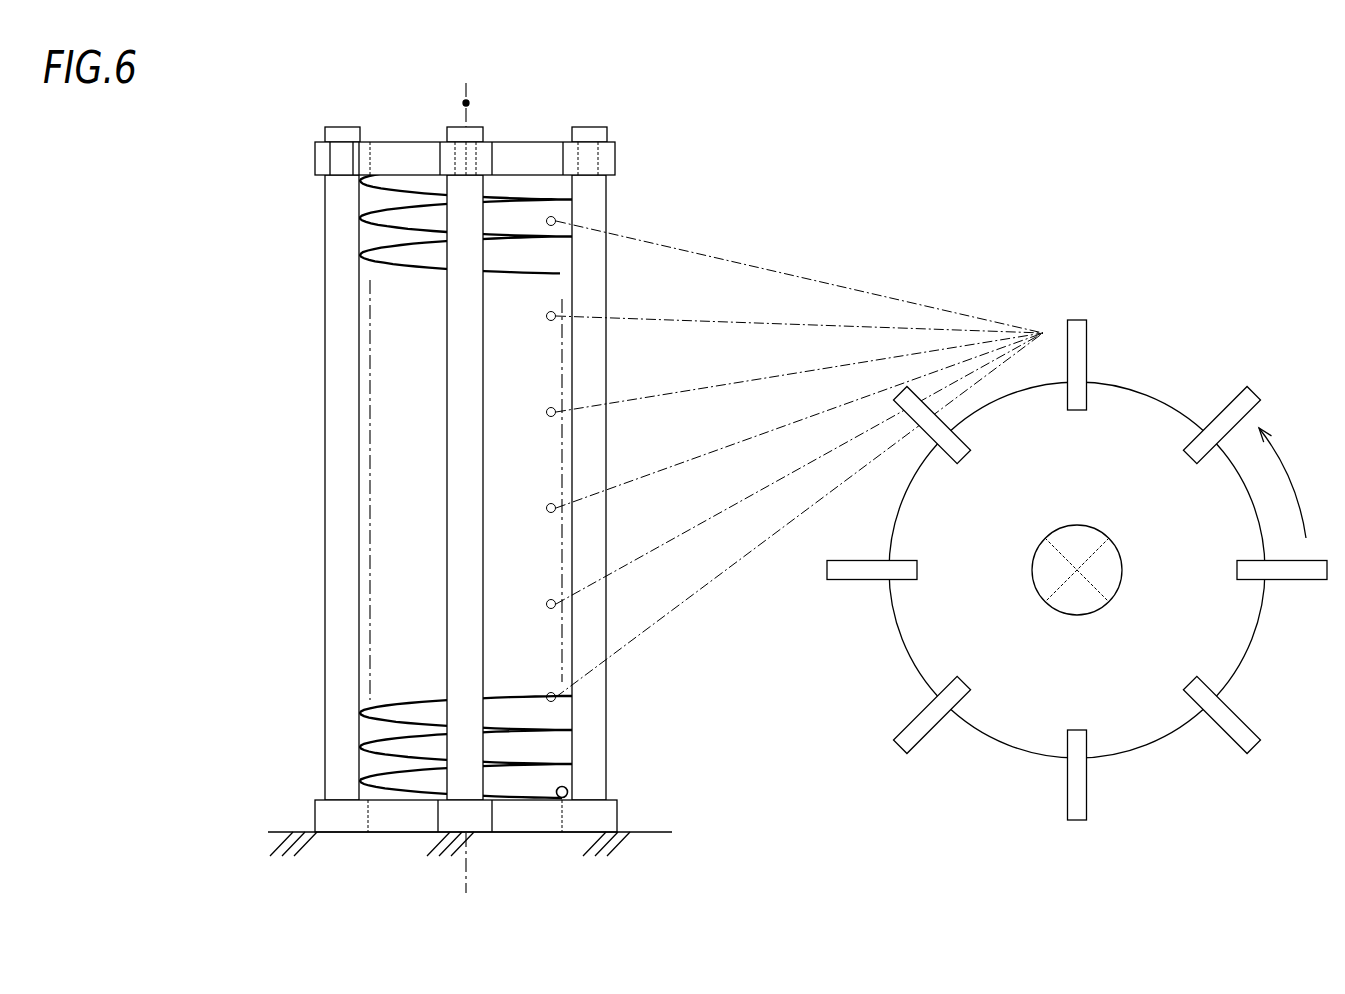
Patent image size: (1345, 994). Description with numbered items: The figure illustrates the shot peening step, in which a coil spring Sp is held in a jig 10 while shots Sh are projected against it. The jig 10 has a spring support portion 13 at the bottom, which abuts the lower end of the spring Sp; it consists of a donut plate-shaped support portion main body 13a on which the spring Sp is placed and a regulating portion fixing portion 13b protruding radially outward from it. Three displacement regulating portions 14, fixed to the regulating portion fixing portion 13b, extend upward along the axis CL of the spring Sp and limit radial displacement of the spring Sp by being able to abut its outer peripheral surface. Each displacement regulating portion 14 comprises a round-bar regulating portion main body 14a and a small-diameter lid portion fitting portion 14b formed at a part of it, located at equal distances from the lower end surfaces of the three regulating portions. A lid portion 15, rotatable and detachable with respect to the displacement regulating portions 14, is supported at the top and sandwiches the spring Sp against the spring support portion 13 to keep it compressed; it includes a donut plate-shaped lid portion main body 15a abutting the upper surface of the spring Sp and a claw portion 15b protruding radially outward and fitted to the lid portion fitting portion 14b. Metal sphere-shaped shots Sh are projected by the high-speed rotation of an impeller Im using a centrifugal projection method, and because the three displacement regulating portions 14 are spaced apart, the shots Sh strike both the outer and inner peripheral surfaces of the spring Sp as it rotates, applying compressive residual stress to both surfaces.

The jig 10 is at (211, 121).
The spring support portion 13 is at (470, 852).
The support portion main body 13a is at (400, 820).
The regulating portion fixing portion 13b is at (340, 820).
The displacement regulating portion 14 is at (454, 442).
The regulating portion main body 14a is at (590, 133).
The lid portion fitting portion 14b is at (477, 157).
The lid portion 15 is at (499, 130).
The lid portion main body 15a is at (398, 158).
The claw portion 15b is at (610, 157).
The axis CL is at (460, 103).
The spring Sp is at (387, 703).
The shot Sh is at (556, 219).
The impeller Im is at (1088, 344).